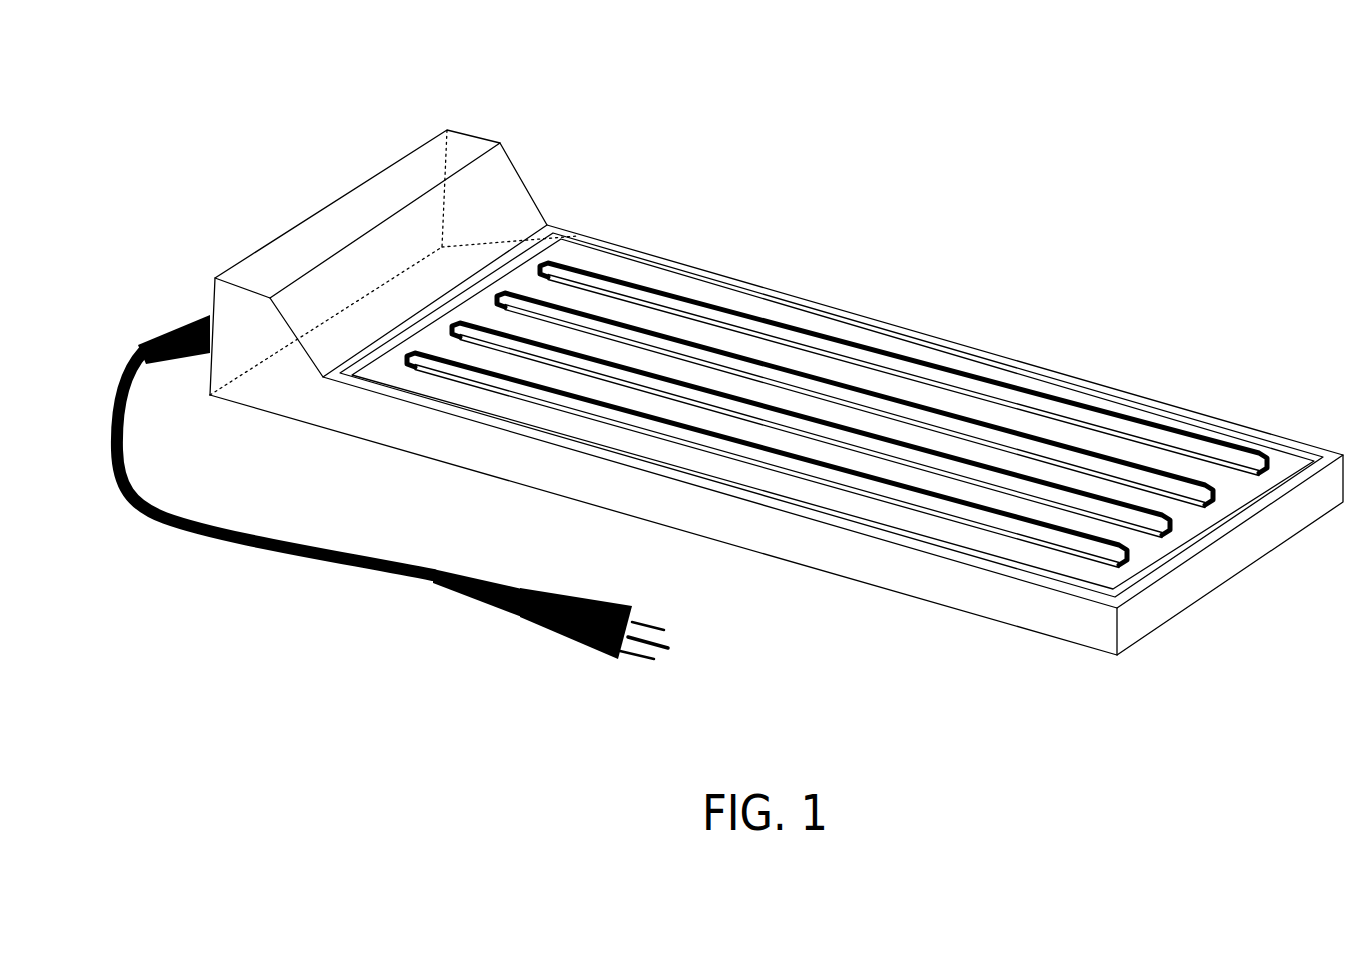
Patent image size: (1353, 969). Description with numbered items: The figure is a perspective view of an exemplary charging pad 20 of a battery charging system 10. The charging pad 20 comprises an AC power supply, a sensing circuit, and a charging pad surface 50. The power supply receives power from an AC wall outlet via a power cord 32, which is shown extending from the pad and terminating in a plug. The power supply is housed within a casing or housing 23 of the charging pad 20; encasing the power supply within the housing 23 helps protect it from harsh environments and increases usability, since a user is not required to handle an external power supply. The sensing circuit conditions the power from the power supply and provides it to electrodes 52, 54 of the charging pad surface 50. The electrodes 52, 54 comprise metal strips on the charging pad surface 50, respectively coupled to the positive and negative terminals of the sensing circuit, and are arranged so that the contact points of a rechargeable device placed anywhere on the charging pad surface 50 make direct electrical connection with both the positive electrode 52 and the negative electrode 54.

The battery charging system 10 is at (730, 340).
The charging pad 20 is at (413, 240).
The housing 23 is at (290, 247).
The power cord 32 is at (317, 560).
The charging pad surface 50 is at (831, 398).
The positive electrode 52 is at (777, 312).
The negative electrode 54 is at (837, 352).